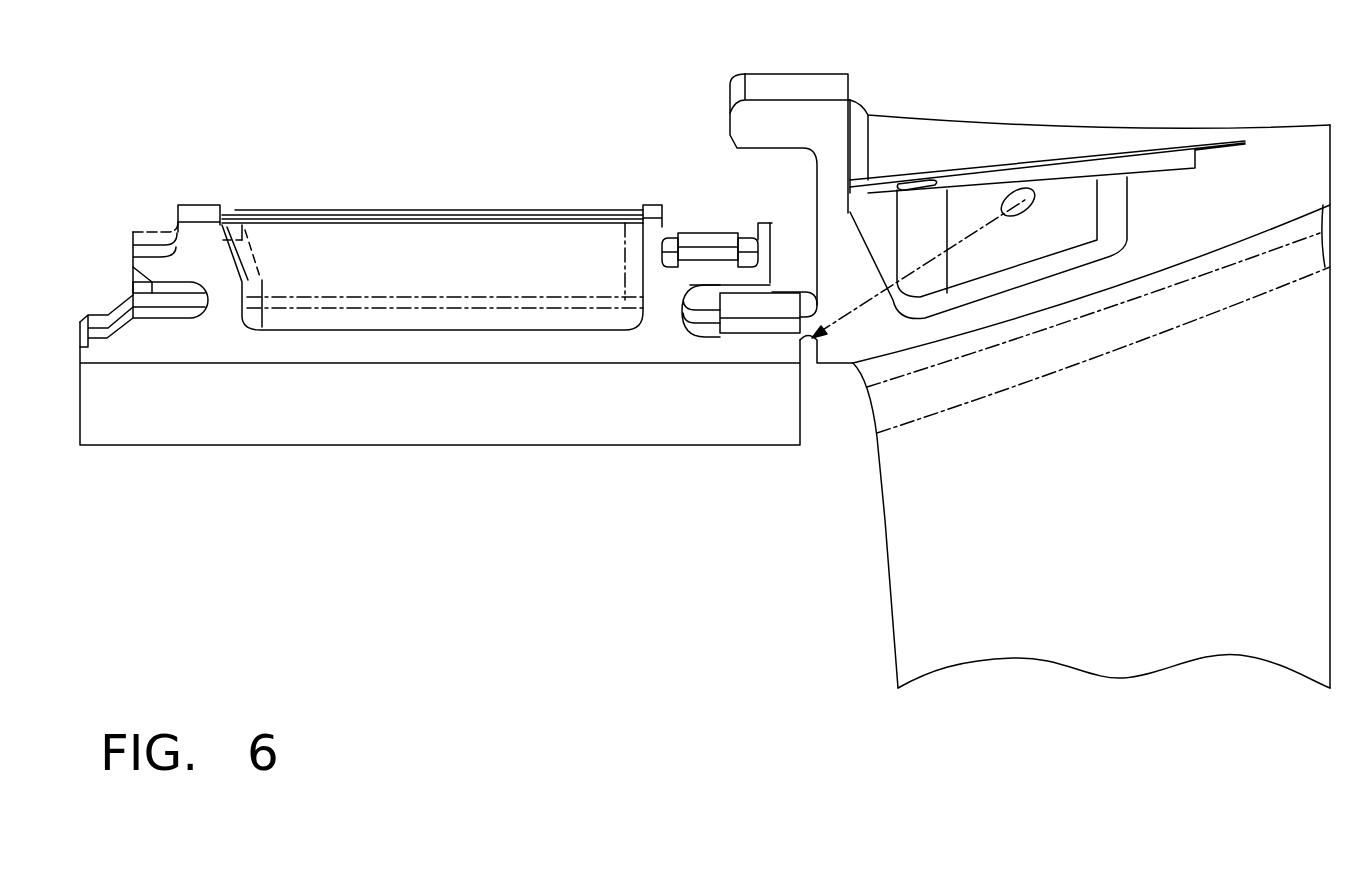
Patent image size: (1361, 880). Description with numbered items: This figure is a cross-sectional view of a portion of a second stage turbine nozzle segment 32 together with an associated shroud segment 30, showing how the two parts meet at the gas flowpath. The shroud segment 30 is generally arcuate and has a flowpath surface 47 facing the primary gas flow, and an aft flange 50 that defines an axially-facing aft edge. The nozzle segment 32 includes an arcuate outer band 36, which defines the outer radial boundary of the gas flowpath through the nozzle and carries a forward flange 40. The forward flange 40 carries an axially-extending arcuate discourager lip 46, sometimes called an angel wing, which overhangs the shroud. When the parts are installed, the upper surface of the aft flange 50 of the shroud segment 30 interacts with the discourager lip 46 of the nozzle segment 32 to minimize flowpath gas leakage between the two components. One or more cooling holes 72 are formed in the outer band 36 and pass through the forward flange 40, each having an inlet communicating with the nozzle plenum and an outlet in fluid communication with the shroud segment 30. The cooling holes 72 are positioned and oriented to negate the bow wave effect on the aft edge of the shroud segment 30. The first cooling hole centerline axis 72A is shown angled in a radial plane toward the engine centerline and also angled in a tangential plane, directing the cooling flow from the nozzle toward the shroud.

The shroud segment 30 is at (328, 467).
The nozzle segment 32 is at (1004, 445).
The outer band 36 is at (1195, 238).
The forward flange 40 is at (840, 330).
The discourager lip 46 is at (768, 330).
The flowpath surface 47 is at (552, 435).
The aft flange 50 is at (740, 335).
The cooling holes 72 is at (1040, 212).
The first cooling hole centerline axis 72A is at (850, 312).